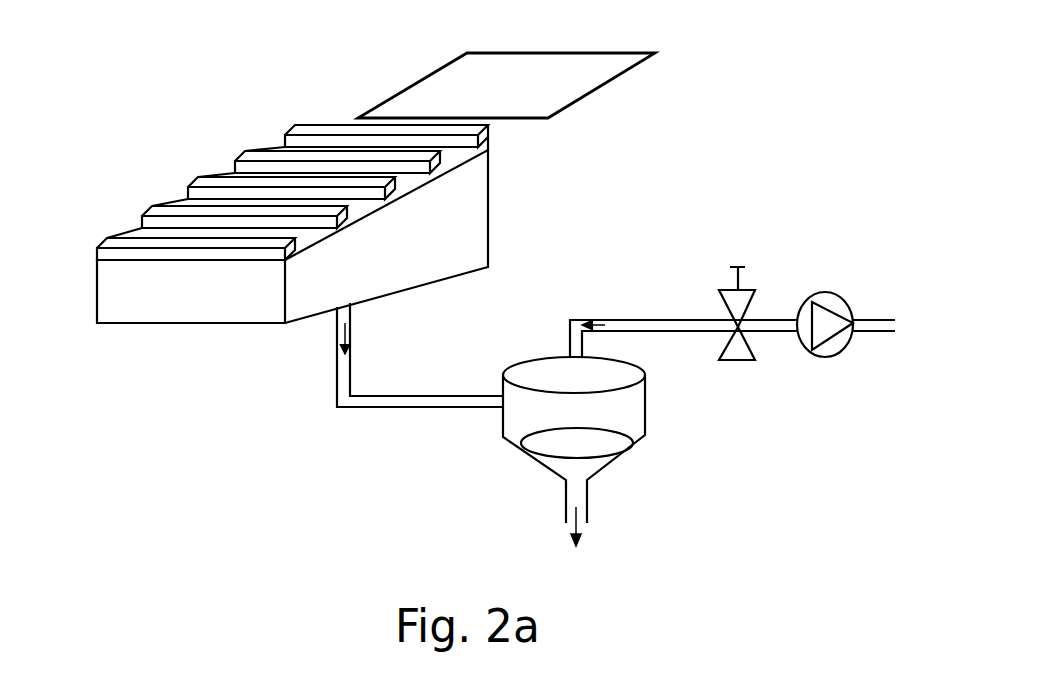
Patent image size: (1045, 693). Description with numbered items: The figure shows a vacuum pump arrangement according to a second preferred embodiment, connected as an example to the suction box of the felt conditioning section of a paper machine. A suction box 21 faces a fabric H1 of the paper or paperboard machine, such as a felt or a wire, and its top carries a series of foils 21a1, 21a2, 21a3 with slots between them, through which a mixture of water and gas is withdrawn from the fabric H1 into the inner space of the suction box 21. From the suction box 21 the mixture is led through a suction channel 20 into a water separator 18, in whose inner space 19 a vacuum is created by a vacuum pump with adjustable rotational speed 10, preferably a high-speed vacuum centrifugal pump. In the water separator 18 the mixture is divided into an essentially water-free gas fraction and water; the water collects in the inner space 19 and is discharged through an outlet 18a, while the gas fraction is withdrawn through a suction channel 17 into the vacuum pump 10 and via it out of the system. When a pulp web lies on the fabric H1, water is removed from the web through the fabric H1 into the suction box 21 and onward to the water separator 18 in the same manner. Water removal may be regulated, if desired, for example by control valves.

The suction box 21 is at (455, 219).
The foil 21a1 is at (95, 248).
The foil 21a2 is at (148, 220).
The foil 21a3 is at (200, 193).
The fabric H1 is at (612, 65).
The suction channel 20 is at (403, 398).
The water separator 18 is at (645, 422).
The inner space 19 is at (630, 422).
The outlet 18a is at (585, 513).
The suction channel 17 is at (641, 327).
The vacuum pump with adjustable rotational speed 10 is at (835, 305).